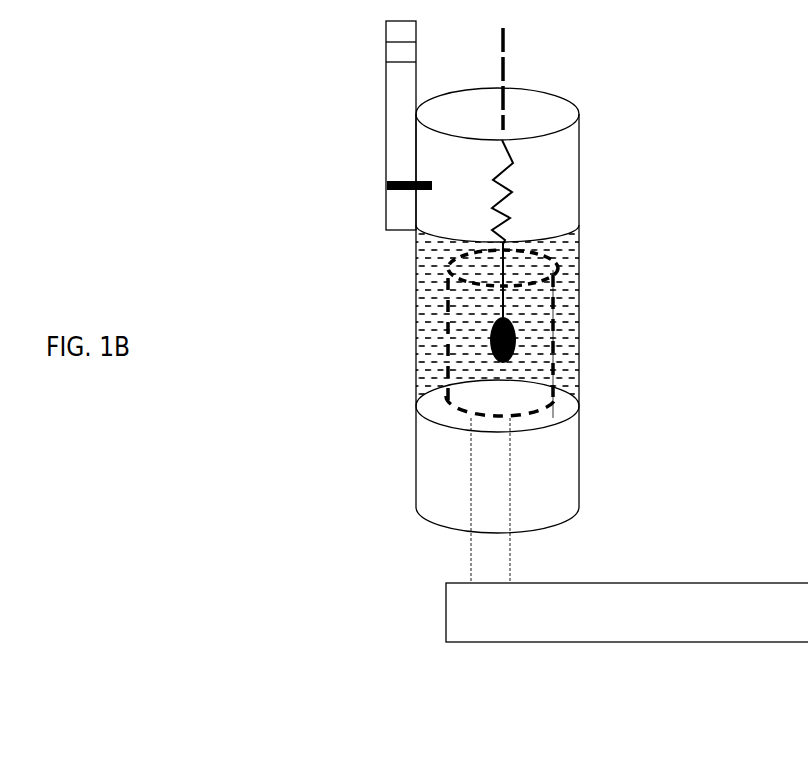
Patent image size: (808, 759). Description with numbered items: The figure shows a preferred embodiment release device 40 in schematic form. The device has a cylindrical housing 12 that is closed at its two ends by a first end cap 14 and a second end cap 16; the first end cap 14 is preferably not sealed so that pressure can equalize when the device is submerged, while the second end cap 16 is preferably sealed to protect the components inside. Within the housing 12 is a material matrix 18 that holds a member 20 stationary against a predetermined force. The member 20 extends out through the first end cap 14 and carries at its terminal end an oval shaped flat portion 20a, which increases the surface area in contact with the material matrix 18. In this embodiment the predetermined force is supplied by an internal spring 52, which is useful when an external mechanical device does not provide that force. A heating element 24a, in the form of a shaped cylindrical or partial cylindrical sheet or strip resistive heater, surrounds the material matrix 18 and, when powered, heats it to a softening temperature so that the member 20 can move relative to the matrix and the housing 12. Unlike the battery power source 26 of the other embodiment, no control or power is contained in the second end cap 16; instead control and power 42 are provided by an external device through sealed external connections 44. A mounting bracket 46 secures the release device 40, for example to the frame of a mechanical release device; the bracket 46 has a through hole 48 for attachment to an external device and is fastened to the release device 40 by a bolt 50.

The housing 12 is at (579, 335).
The first end cap 14 is at (580, 152).
The second end cap 16 is at (580, 501).
The material matrix 18 is at (560, 271).
The member 20 is at (508, 62).
The oval shaped flat portion 20a is at (490, 330).
The heating element 24a is at (440, 343).
The power source 26 is at (540, 440).
The release device 40 is at (676, 154).
The control and power 42 is at (722, 588).
The external connections 44 is at (470, 563).
The mounting bracket 46 is at (386, 145).
The through hole 48 is at (386, 53).
The bolt 50 is at (387, 186).
The internal spring 52 is at (513, 164).